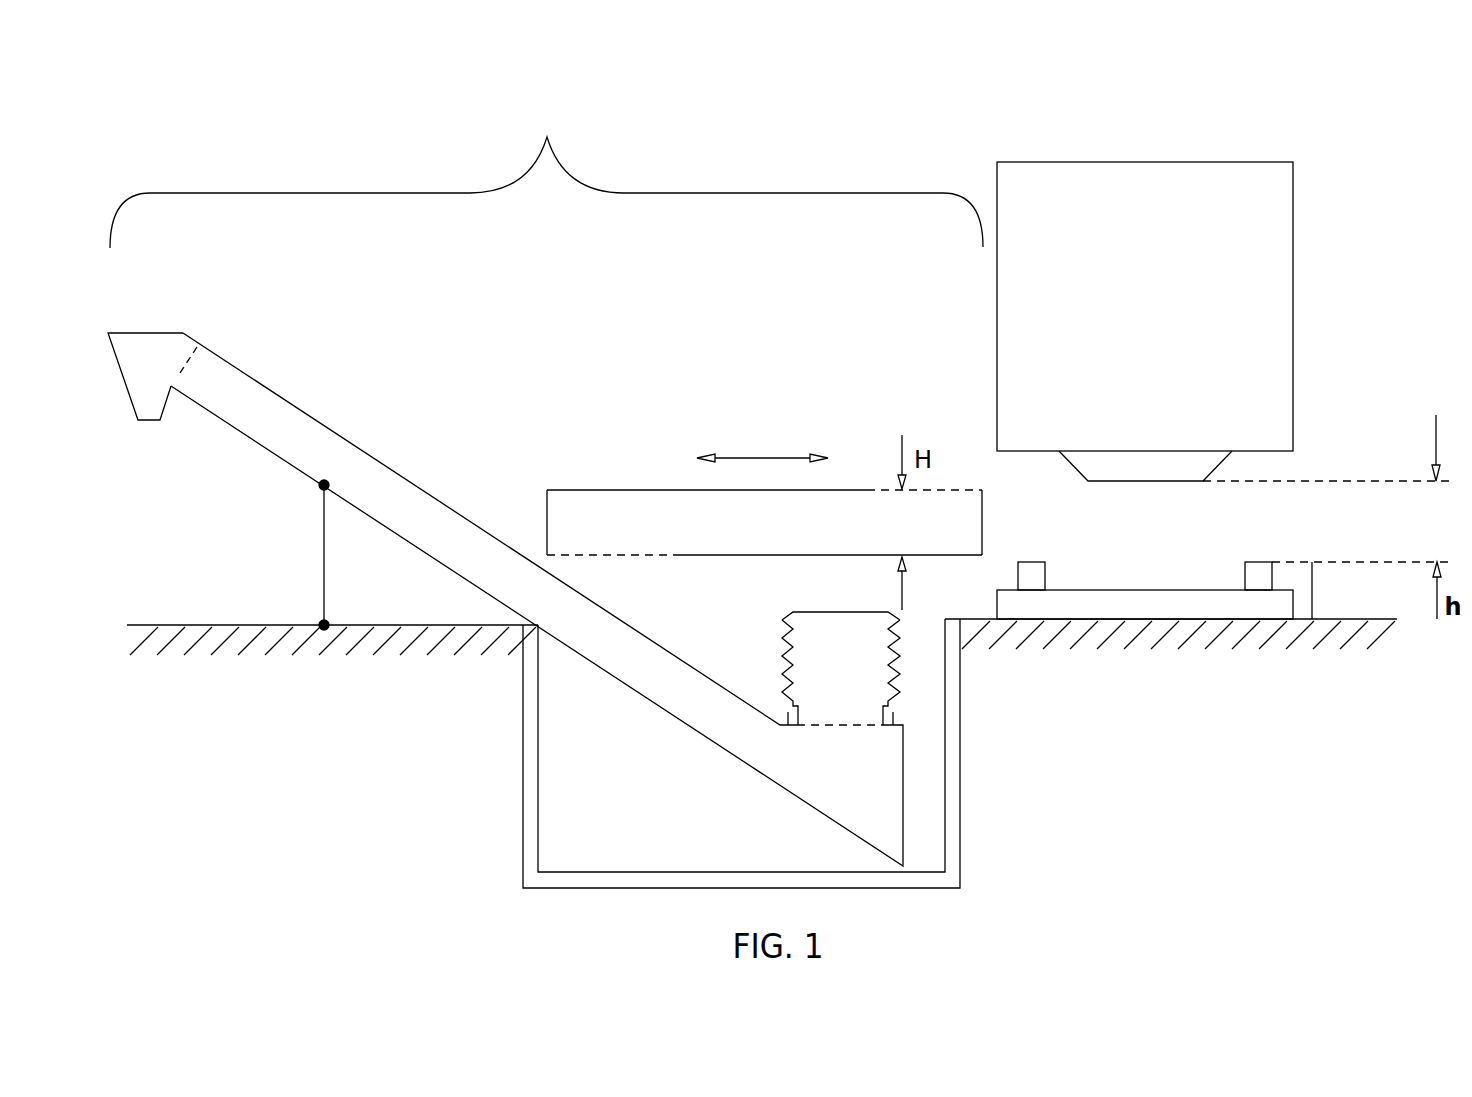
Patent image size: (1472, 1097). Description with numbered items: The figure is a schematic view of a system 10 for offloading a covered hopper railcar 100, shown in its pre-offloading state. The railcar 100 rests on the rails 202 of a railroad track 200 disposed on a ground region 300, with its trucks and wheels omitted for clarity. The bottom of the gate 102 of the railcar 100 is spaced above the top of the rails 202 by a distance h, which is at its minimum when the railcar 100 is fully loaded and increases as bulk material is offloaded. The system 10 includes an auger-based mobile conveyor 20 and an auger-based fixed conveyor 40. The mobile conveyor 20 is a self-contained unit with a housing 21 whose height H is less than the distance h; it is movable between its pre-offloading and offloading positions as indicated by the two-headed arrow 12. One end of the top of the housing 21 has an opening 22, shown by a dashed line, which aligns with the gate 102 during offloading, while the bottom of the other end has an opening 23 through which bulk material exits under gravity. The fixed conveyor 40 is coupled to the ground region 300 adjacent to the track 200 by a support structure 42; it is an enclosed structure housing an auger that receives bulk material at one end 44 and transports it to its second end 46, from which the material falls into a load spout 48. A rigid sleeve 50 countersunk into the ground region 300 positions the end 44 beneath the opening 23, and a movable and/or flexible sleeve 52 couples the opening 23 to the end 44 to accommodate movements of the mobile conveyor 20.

The system 10 is at (547, 137).
The two-headed arrow 12 is at (763, 458).
The auger-based mobile conveyor 20 is at (764, 499).
The housing 21 is at (665, 490).
The opening 22 is at (960, 490).
The opening 23 is at (615, 555).
The auger-based fixed conveyor 40 is at (282, 397).
The support structure 42 is at (324, 555).
The end 44 is at (837, 727).
The second end 46 is at (187, 363).
The load spout 48 is at (122, 377).
The rigid sleeve 50 is at (523, 792).
The movable and/or flexible sleeve 52 is at (787, 660).
The covered hopper railcar 100 is at (1222, 162).
The gate 102 is at (1181, 465).
The railroad track 200 is at (1312, 590).
The rails 202 is at (1255, 572).
The ground region 300 is at (218, 625).